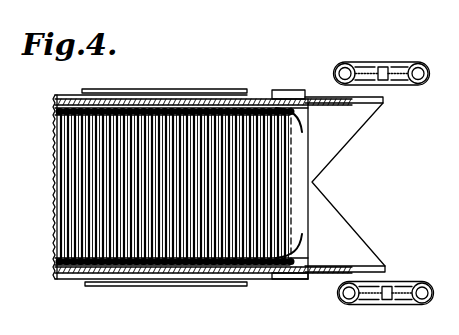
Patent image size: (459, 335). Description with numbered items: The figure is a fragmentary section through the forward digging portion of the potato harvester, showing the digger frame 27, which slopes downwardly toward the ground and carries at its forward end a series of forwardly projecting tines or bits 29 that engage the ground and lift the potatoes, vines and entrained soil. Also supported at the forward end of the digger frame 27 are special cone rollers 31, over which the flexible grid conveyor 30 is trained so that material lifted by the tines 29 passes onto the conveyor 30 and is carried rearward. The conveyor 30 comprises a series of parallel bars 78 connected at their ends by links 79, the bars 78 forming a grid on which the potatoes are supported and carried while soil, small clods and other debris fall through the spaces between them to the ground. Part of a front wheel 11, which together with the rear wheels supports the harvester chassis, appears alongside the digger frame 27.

The front wheels 11 is at (397, 60).
The digger frame 27 is at (282, 93).
The tines or bits 29 is at (352, 237).
The flexible grid conveyor 30 is at (181, 226).
The cone rollers 31 is at (277, 100).
The parallel bars 78 is at (80, 178).
The links 79 is at (152, 107).